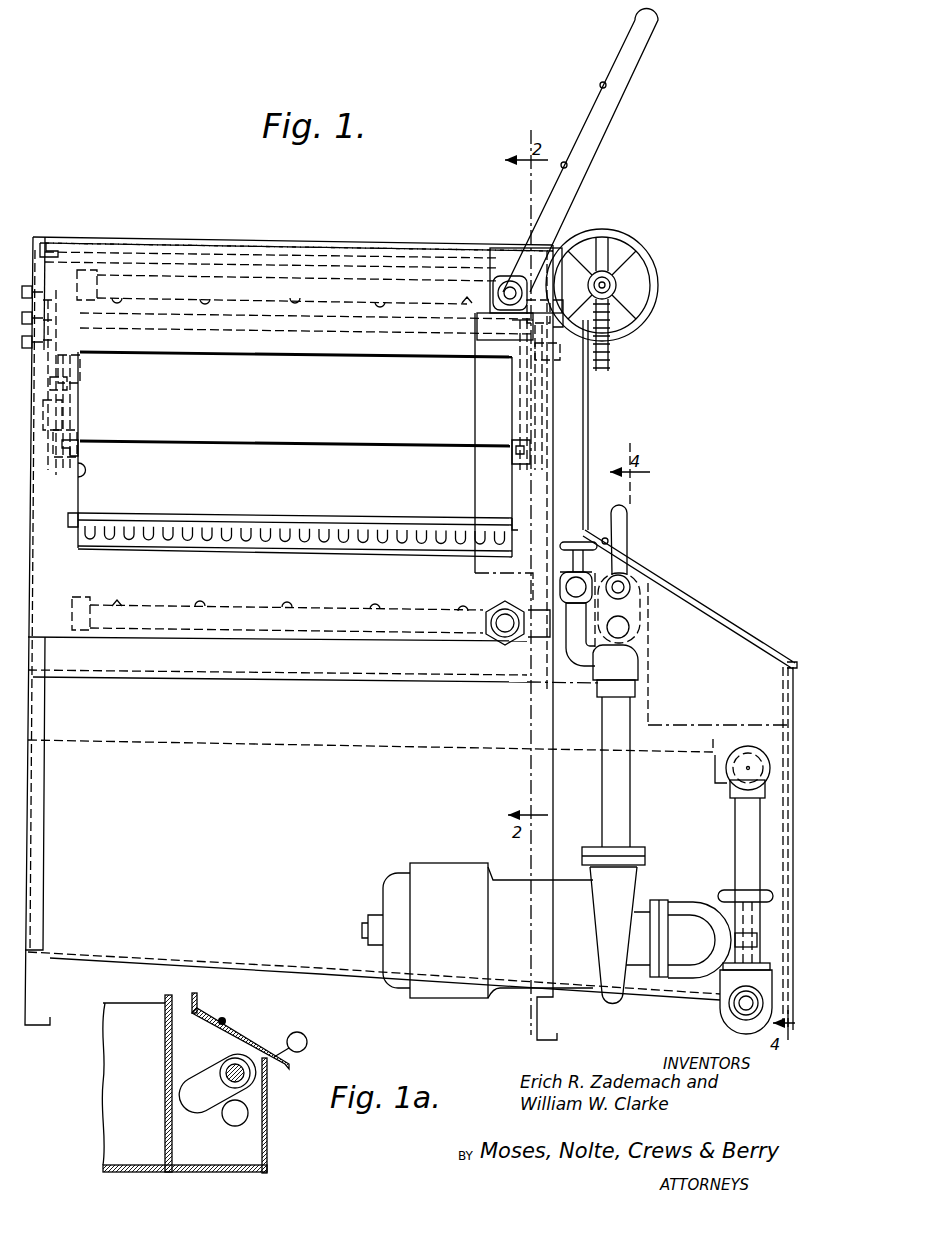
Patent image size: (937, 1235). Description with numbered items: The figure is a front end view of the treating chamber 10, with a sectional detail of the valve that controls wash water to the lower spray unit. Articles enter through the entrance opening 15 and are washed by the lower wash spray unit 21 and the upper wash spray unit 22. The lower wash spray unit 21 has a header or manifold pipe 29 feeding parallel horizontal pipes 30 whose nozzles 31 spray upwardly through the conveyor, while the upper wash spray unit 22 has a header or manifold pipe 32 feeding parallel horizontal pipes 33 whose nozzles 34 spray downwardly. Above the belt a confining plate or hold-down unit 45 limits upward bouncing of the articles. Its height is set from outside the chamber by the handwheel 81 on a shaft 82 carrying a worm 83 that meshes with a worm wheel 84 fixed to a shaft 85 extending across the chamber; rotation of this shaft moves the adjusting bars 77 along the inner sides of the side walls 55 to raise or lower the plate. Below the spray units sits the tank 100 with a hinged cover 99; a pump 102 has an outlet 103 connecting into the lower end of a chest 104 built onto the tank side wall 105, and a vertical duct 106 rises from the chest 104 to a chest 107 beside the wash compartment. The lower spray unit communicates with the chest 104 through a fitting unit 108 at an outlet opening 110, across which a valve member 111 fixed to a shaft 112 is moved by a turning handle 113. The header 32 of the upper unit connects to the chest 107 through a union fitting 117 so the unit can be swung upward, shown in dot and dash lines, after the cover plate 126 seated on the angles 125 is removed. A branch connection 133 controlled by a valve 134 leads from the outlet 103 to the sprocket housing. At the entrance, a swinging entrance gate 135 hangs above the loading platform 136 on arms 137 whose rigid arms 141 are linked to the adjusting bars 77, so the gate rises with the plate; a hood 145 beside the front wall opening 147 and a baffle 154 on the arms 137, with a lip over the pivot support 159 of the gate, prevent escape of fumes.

In FIG. 1, the treating chamber 10 is at (268, 237).
In FIG. 1, the entrance opening 15 is at (80, 477).
In FIG. 1, the lower wash spray unit 21 is at (330, 608).
In FIG. 1, the upper wash spray unit 22 is at (215, 273).
In FIG. 1, the header or manifold pipe 29 is at (505, 632).
In FIG. 1, the parallel horizontal pipes 30 is at (247, 610).
In FIG. 1, the nozzles 31 is at (117, 600).
In FIG. 1, the header or manifold pipe 32 is at (492, 290).
In FIG. 1, the parallel horizontal pipes 33 is at (263, 298).
In FIG. 1, the nozzles 34 is at (118, 302).
In FIG. 1, the confining plate or hold-down unit 45 is at (191, 541).
In FIG. 1, the side wall 55 is at (567, 475).
In FIG. 1, the adjusting bar 77 is at (60, 422).
In FIG. 1, the handwheel 81 is at (643, 251).
In FIG. 1, the shaft 82 is at (617, 282).
In FIG. 1, the worm 83 is at (620, 290).
In FIG. 1, the worm wheel 84 is at (612, 360).
In FIG. 1, the shaft 85 is at (392, 330).
In FIG. 1, the hinged cover 99 is at (678, 588).
In FIG. 1A, the hinged cover 99 is at (255, 1043).
In FIG. 1, the tank 100 is at (760, 640).
In FIG. 1, the pump 102 is at (628, 886).
In FIG. 1, the outlet 103 is at (620, 792).
In FIG. 1, the chest 104 is at (672, 669).
In FIG. 1A, the chest 104 is at (255, 1149).
In FIG. 1, the side wall 105 is at (708, 627).
In FIG. 1A, the side wall 105 is at (170, 1073).
In FIG. 1, the vertical duct 106 is at (573, 493).
In FIG. 1A, the vertical duct 106 is at (193, 1003).
In FIG. 1, the chest 107 is at (592, 235).
In FIG. 1, the fitting unit 108 is at (543, 617).
In FIG. 1, the outlet opening 110 is at (628, 630).
In FIG. 1A, the outlet opening 110 is at (232, 1116).
In FIG. 1, the valve member 111 is at (638, 610).
In FIG. 1A, the valve member 111 is at (203, 1077).
In FIG. 1, the shaft 112 is at (627, 578).
In FIG. 1A, the shaft 112 is at (228, 1080).
In FIG. 1, the turning handle 113 is at (623, 525).
In FIG. 1A, the turning handle 113 is at (292, 1049).
In FIG. 1, the union fitting 117 is at (507, 278).
In FIG. 1, the angles 125 is at (50, 247).
In FIG. 1, the cover plate 126 is at (345, 258).
In FIG. 1, the branch connection 133 is at (568, 597).
In FIG. 1, the valve 134 is at (569, 543).
In FIG. 1, the swinging entrance gate 135 is at (155, 453).
In FIG. 1, the loading platform 136 is at (340, 537).
In FIG. 1, the arms 137 is at (67, 388).
In FIG. 1, the arm 141 is at (58, 358).
In FIG. 1, the hood 145 is at (204, 357).
In FIG. 1, the opening 147 is at (265, 358).
In FIG. 1, the baffle 154 is at (272, 430).
In FIG. 1, the pivot support 159 is at (80, 450).